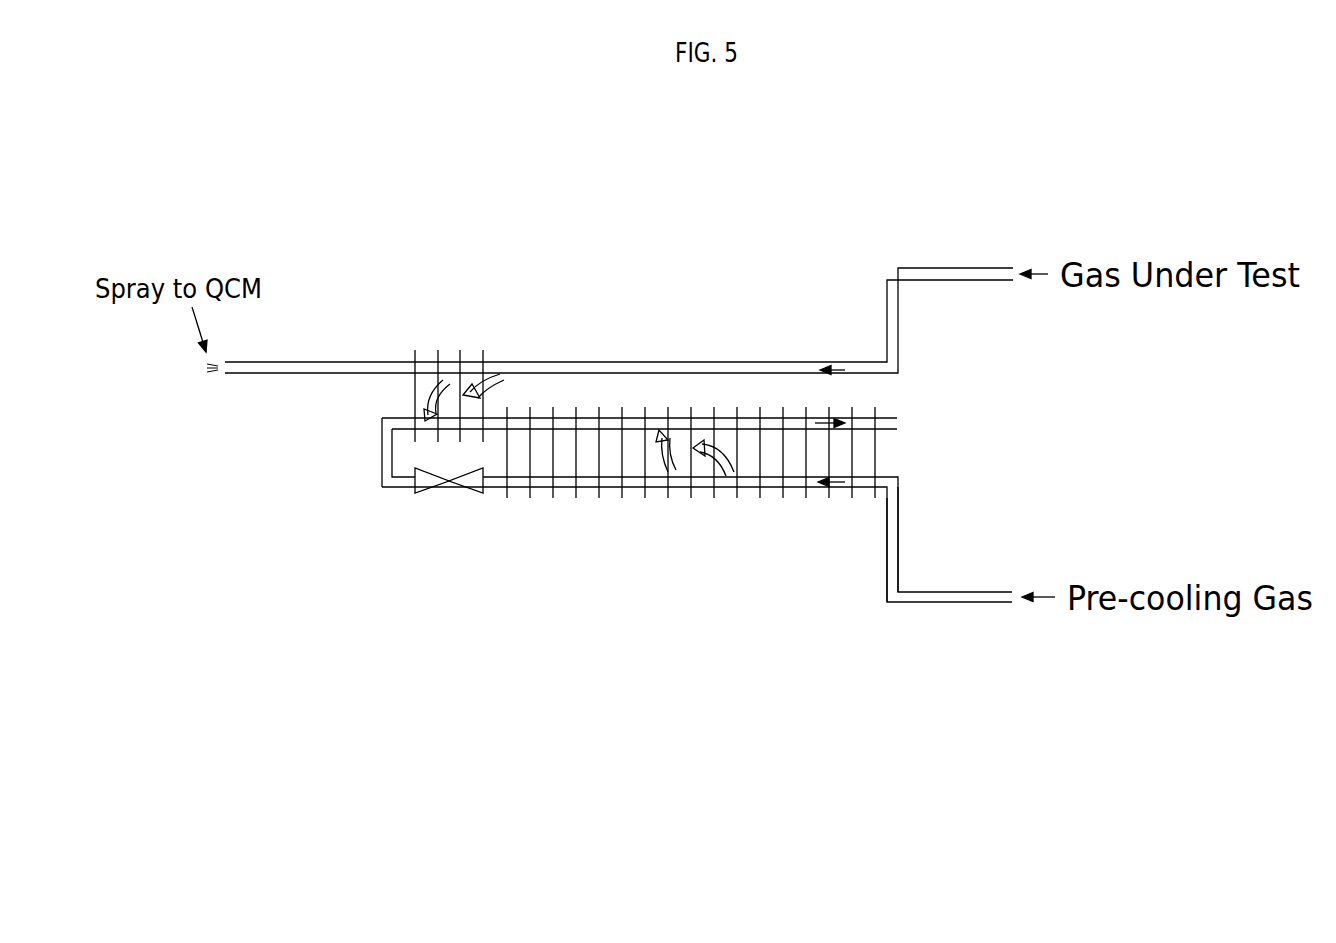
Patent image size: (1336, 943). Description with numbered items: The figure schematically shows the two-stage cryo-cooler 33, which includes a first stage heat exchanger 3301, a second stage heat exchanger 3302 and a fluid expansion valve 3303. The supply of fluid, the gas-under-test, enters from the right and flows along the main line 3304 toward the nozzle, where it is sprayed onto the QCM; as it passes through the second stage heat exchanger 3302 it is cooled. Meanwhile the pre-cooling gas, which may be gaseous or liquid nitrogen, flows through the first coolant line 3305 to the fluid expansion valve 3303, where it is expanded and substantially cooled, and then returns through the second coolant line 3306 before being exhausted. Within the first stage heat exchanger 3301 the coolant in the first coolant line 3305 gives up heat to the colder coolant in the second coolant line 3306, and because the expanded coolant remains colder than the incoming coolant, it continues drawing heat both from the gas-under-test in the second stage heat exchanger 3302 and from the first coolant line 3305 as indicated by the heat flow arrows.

The cooler 33 is at (956, 442).
The first stage heat exchanger 3301 is at (648, 503).
The second stage heat exchanger 3302 is at (438, 352).
The fluid expansion valve 3303 is at (425, 482).
The main line 3304 is at (684, 360).
The first coolant line 3305 is at (887, 583).
The second coolant line 3306 is at (383, 456).